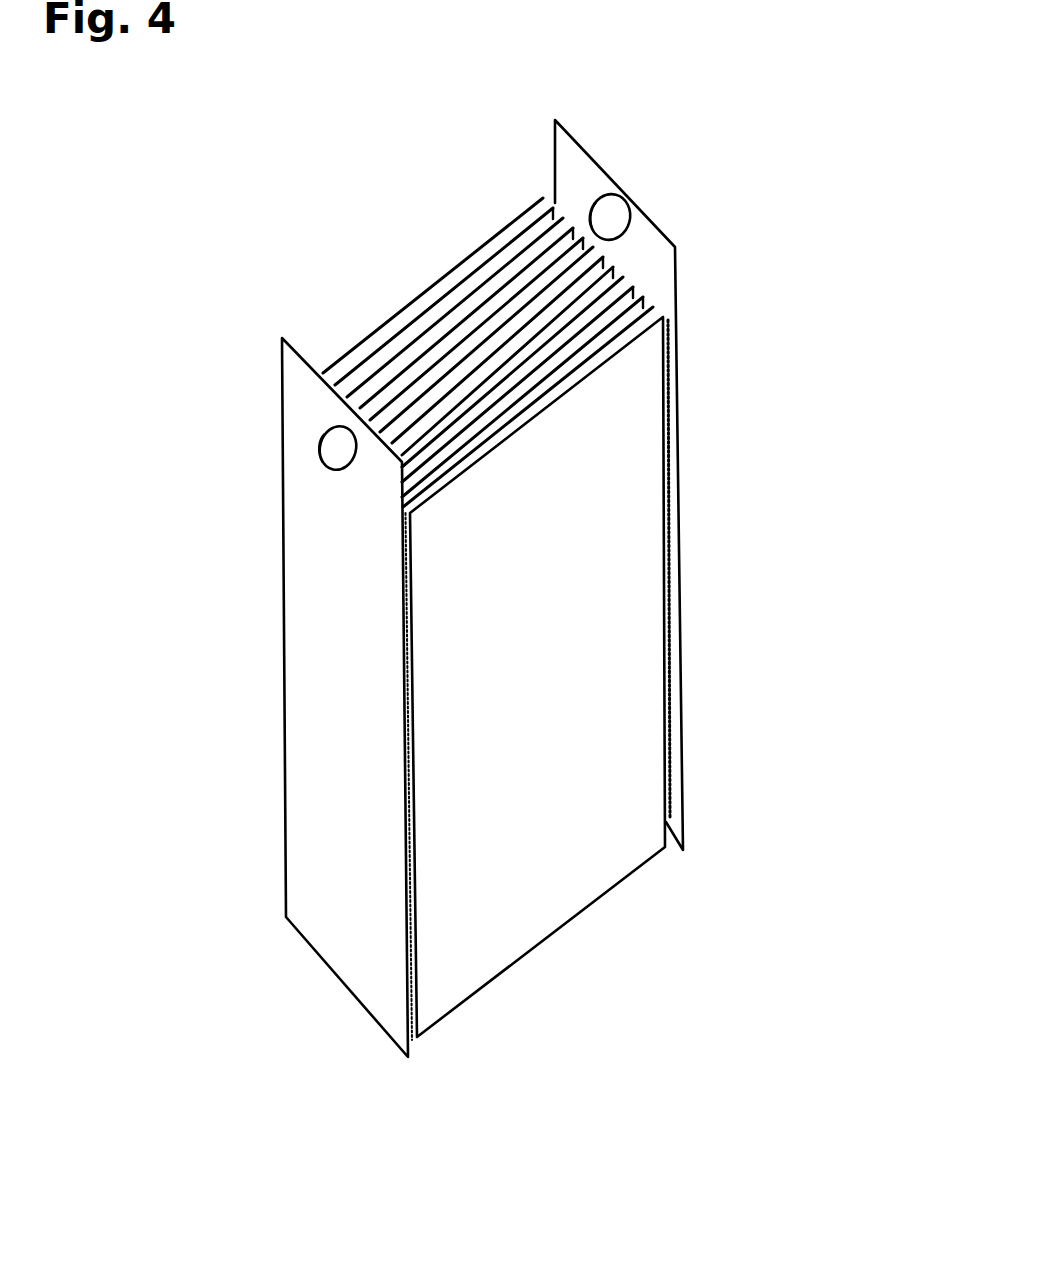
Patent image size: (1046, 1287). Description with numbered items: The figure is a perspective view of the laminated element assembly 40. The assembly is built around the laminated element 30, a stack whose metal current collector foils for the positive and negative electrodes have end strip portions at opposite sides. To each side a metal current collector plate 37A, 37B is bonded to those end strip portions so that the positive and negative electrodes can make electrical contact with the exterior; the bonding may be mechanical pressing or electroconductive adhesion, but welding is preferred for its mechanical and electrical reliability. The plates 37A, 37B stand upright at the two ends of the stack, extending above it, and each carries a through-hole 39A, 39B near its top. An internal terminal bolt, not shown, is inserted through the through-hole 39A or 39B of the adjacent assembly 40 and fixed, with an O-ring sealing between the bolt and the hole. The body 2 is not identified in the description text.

The heat exchanger stack / core body 2 is at (628, 557).
The laminated element 30 is at (412, 266).
The metal current collector plate 37A is at (300, 379).
The metal current collector plate 37B is at (572, 161).
The through-hole 39A is at (336, 448).
The through-hole 39B is at (607, 213).
The laminated element assembly 40 is at (463, 608).